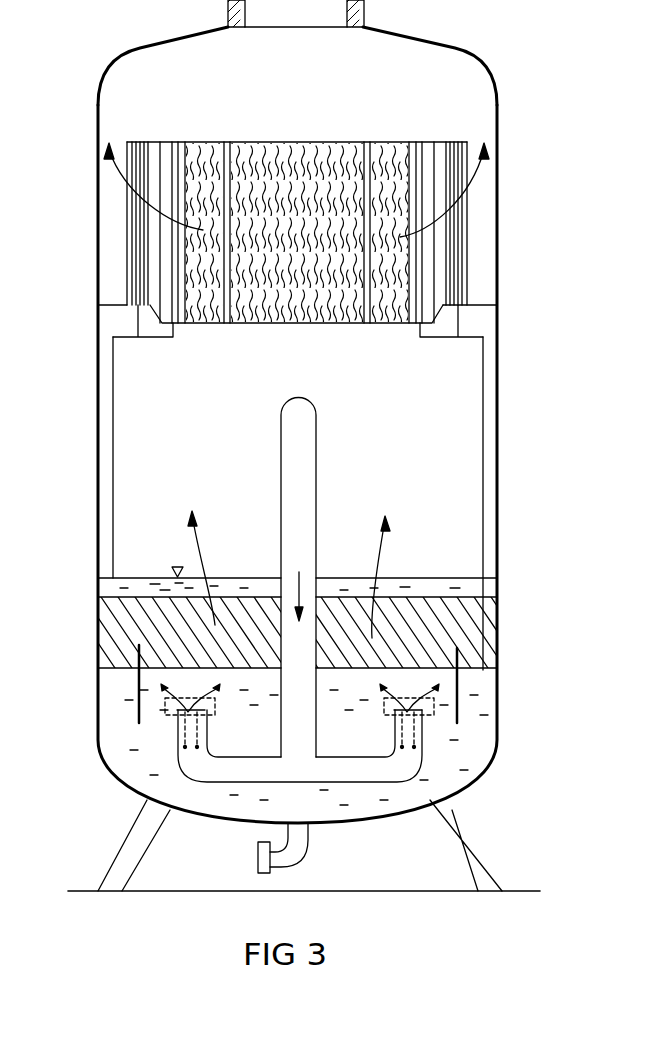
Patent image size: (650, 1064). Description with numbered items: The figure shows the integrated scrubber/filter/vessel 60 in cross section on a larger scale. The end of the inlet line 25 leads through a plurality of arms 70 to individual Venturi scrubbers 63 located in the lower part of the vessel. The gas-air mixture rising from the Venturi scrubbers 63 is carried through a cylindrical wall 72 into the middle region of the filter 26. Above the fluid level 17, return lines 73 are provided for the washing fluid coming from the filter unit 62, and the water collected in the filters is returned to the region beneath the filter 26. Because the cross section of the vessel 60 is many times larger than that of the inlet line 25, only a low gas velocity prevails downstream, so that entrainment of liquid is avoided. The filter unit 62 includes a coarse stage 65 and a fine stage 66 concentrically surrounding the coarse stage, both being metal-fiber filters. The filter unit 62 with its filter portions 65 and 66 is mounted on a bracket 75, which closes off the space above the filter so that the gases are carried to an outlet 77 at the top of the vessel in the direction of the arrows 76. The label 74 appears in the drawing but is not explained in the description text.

The fluid level 17 is at (148, 577).
The inlet line 25 is at (311, 470).
The filter 26 is at (470, 625).
The integrated scrubber/filter/vessel 60 is at (498, 437).
The filter unit 62 is at (329, 210).
The Venturi scrubbers 63 is at (178, 728).
The coarse stage 65 is at (418, 253).
The fine stage 66 is at (463, 280).
The arms 70 is at (217, 770).
The cylindrical wall 72 is at (458, 700).
The return lines 73 is at (483, 387).
The inner chamber 74 is at (448, 465).
The bracket 75 is at (118, 305).
The arrows 76 is at (110, 168).
The outlet 77 is at (364, 14).